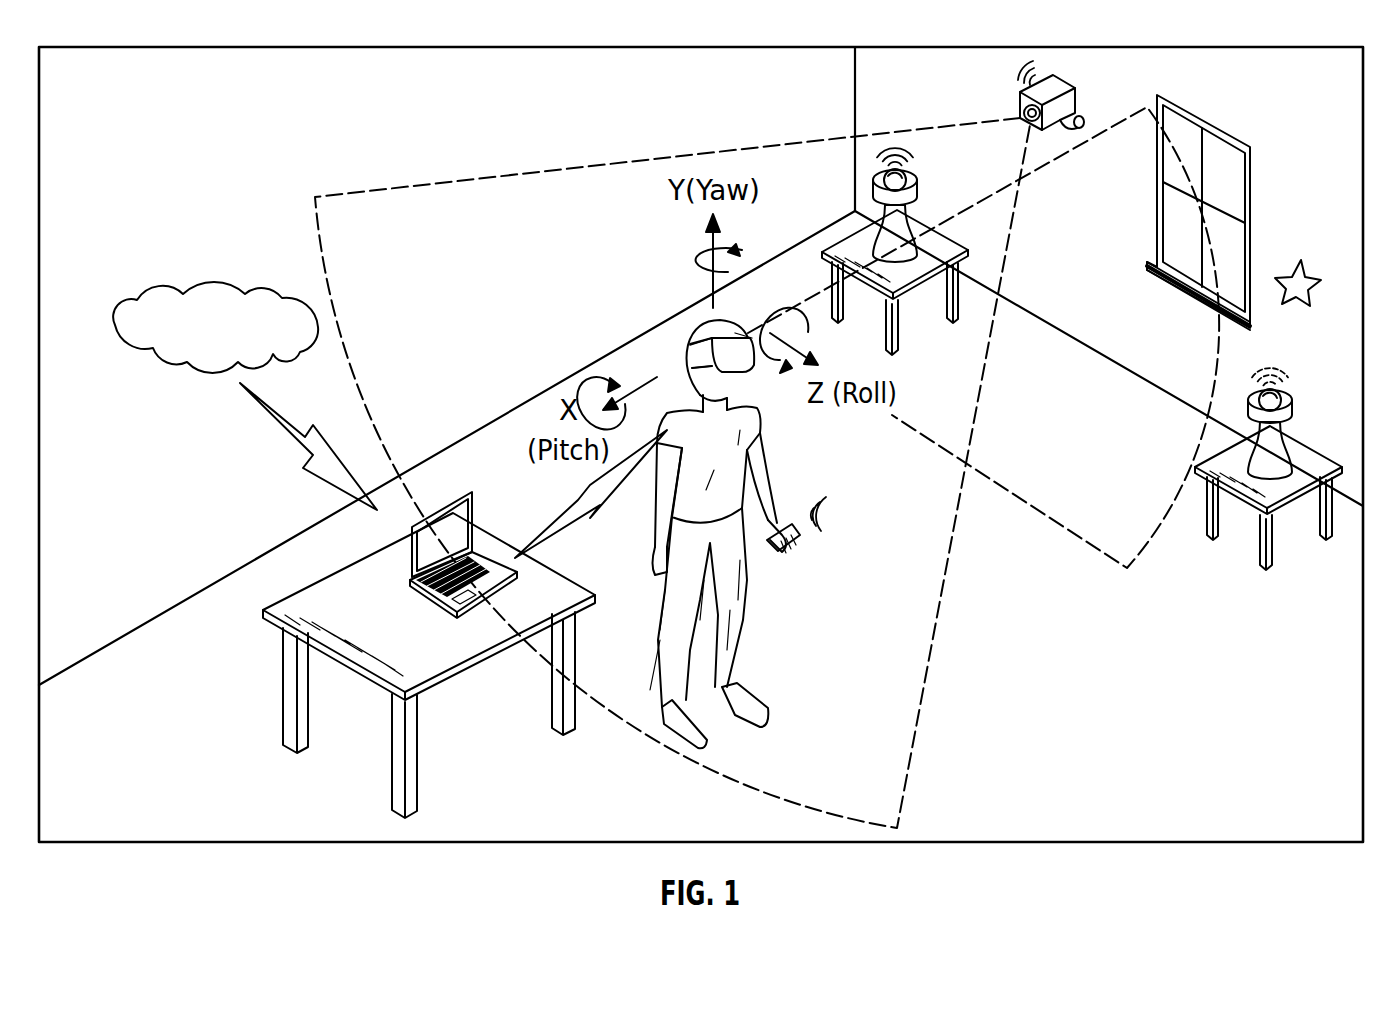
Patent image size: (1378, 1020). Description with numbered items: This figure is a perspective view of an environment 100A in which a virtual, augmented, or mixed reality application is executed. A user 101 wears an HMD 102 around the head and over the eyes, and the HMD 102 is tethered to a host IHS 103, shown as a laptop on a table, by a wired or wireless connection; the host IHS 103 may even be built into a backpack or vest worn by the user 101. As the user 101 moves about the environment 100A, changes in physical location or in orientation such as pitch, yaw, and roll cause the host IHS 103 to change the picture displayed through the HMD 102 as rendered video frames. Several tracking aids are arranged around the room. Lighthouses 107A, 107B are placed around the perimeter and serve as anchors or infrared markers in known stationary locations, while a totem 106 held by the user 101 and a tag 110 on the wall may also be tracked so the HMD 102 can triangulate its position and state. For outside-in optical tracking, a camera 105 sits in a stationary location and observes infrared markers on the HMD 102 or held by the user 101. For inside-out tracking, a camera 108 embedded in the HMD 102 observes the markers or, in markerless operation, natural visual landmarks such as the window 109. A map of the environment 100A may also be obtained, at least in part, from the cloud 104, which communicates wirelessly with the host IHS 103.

The environment 100A is at (126, 46).
The user 101 is at (743, 607).
The HMD 102 is at (735, 362).
The host Information Handling System (IHS) 103 is at (410, 545).
The cloud 104 is at (137, 300).
The camera 105 is at (1080, 96).
The totem 106 is at (802, 542).
The lighthouse 107A is at (918, 190).
The lighthouse 107B is at (1292, 405).
The camera 108 is at (735, 333).
The window 109 is at (1252, 172).
The tag 110 is at (1310, 268).